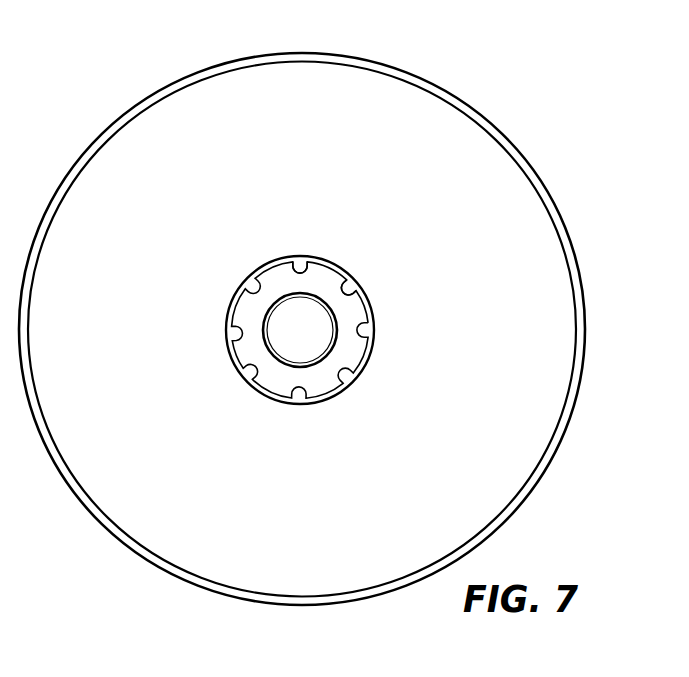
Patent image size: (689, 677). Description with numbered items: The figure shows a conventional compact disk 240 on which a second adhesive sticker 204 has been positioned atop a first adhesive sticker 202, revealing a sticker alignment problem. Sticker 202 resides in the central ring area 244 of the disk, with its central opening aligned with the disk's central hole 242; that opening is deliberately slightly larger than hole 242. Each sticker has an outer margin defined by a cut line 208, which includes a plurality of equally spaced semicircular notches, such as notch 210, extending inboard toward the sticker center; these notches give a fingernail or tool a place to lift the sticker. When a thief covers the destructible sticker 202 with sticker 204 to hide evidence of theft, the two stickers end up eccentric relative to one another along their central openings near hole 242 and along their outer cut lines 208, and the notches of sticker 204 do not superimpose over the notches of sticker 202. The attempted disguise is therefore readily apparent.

The compact disk 240 is at (563, 199).
The adhesive sticker 202 is at (372, 337).
The adhesive sticker 204 is at (286, 272).
The cut line 208 is at (334, 264).
The notch 210 is at (362, 293).
The hole 242 is at (263, 364).
The central ring area 244 is at (284, 402).